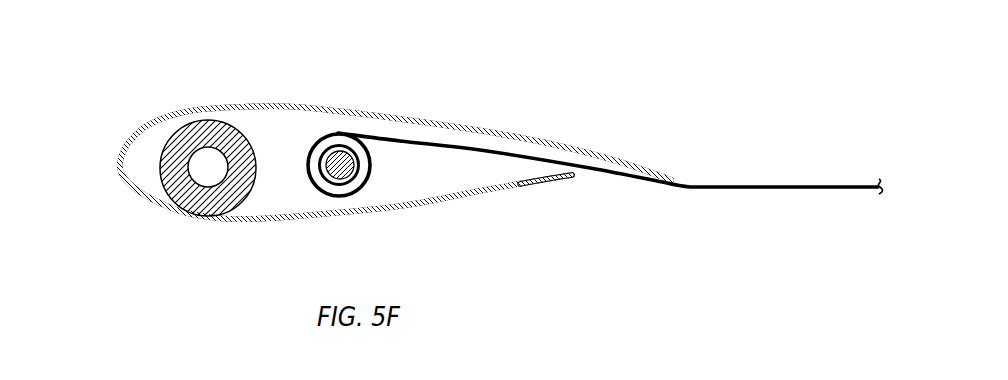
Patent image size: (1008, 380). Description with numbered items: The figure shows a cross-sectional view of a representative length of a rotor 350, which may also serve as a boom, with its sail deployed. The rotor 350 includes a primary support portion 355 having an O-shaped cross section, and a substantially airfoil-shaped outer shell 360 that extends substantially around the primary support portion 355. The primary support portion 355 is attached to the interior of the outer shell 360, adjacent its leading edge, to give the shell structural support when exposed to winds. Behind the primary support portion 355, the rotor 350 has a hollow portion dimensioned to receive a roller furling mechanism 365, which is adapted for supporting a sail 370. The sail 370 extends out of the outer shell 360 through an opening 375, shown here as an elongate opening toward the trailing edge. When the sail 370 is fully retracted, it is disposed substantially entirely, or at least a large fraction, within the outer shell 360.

The rotor 350 is at (466, 166).
The primary support portion 355 is at (216, 200).
The outer shell 360 is at (155, 210).
The roller furling mechanism 365 is at (344, 150).
The sail 370 is at (442, 152).
The opening 375 is at (578, 174).